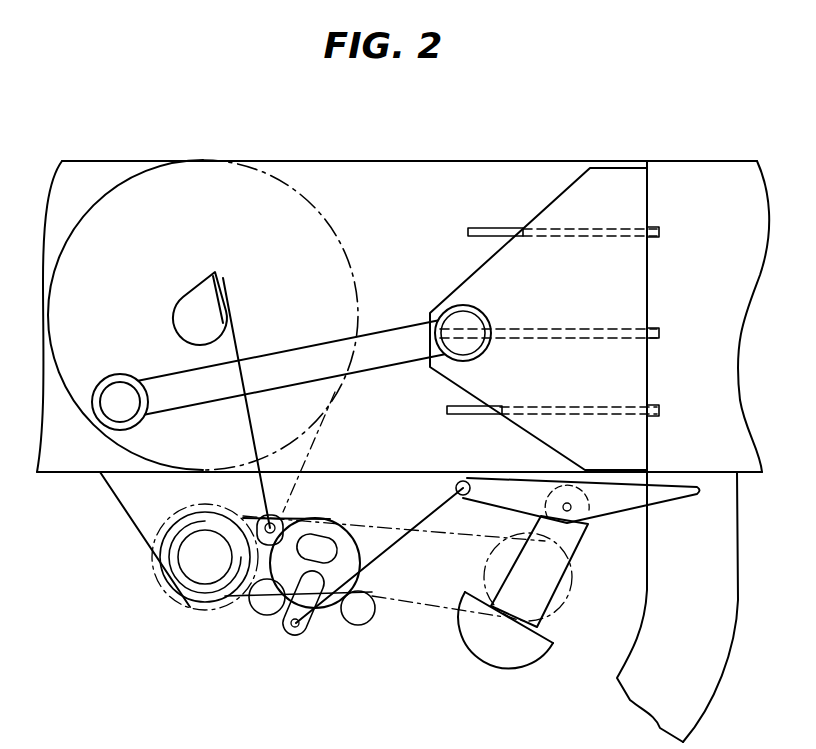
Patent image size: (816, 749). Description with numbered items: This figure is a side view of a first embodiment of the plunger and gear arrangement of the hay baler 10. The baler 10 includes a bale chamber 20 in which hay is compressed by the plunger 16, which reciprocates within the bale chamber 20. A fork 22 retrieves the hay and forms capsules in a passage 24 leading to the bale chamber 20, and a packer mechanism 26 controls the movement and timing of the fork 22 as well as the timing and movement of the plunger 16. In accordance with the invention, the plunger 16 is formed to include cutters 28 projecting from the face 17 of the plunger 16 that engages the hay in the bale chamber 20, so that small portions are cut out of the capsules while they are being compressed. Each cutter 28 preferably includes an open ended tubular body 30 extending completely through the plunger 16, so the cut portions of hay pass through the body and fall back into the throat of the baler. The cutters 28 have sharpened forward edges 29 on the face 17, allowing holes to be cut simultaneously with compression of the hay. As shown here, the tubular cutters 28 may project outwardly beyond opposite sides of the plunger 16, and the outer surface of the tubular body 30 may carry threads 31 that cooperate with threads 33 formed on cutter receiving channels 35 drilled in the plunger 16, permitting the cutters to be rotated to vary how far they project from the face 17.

The baler 10 is at (345, 158).
The plunger 16 is at (462, 283).
The face 17 is at (650, 196).
The bale chamber 20 is at (740, 178).
The fork 22 is at (612, 505).
The passage 24 is at (645, 598).
The packer mechanism 26 is at (93, 200).
The cutters 28 is at (661, 230).
The sharpened forward edges 29 is at (659, 341).
The tubular body 30 is at (566, 228).
The threads 31 is at (500, 228).
The threads 33 is at (578, 239).
The cutter receiving channels 35 is at (552, 408).